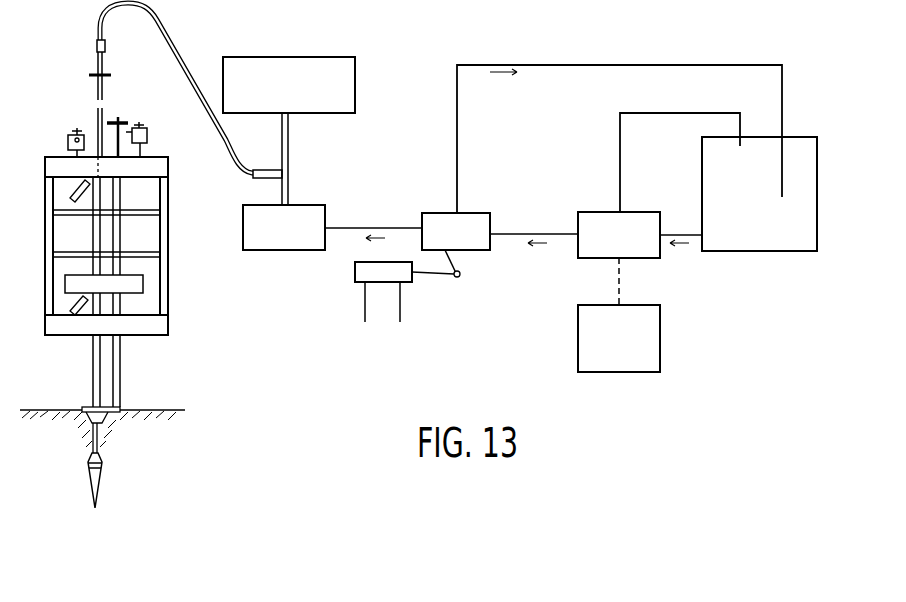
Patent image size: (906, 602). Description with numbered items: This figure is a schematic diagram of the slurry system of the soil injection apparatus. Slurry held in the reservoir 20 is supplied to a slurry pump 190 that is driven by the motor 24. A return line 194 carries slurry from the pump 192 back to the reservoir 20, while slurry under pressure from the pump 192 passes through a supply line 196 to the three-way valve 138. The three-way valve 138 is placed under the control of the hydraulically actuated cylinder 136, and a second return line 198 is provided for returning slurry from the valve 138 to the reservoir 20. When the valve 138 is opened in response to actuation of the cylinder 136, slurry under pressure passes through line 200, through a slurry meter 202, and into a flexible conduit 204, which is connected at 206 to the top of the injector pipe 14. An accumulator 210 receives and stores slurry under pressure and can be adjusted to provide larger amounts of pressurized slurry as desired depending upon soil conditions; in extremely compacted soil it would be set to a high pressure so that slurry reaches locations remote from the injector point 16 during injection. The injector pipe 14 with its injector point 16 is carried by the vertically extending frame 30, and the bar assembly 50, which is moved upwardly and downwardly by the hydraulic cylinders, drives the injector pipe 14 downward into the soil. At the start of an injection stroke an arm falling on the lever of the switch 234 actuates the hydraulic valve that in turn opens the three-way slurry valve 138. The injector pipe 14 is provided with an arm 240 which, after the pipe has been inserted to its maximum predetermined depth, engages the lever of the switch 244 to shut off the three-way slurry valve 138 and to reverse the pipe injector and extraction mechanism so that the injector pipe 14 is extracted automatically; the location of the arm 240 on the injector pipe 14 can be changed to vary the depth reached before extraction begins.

The injector pipe 14 is at (92, 88).
The injector point 16 is at (101, 486).
The reservoir 20 is at (765, 254).
The motor 24 is at (649, 323).
The frame 30 is at (172, 320).
The bar assembly 50 is at (134, 284).
The hydraulically actuated cylinder 136 is at (367, 268).
The three-way valve 138 is at (446, 212).
The slurry pump 190 is at (676, 232).
The pump 192 is at (602, 250).
The return line 194 is at (619, 178).
The supply line 196 is at (556, 240).
The return line 198 is at (553, 63).
The line 200 is at (350, 228).
The slurry meter 202 is at (272, 247).
The flexible conduit 204 is at (183, 63).
The connection 206 is at (95, 46).
The accumulator 210 is at (313, 107).
The switch 234 is at (147, 138).
The arm 240 is at (104, 73).
The switch 244 is at (68, 137).